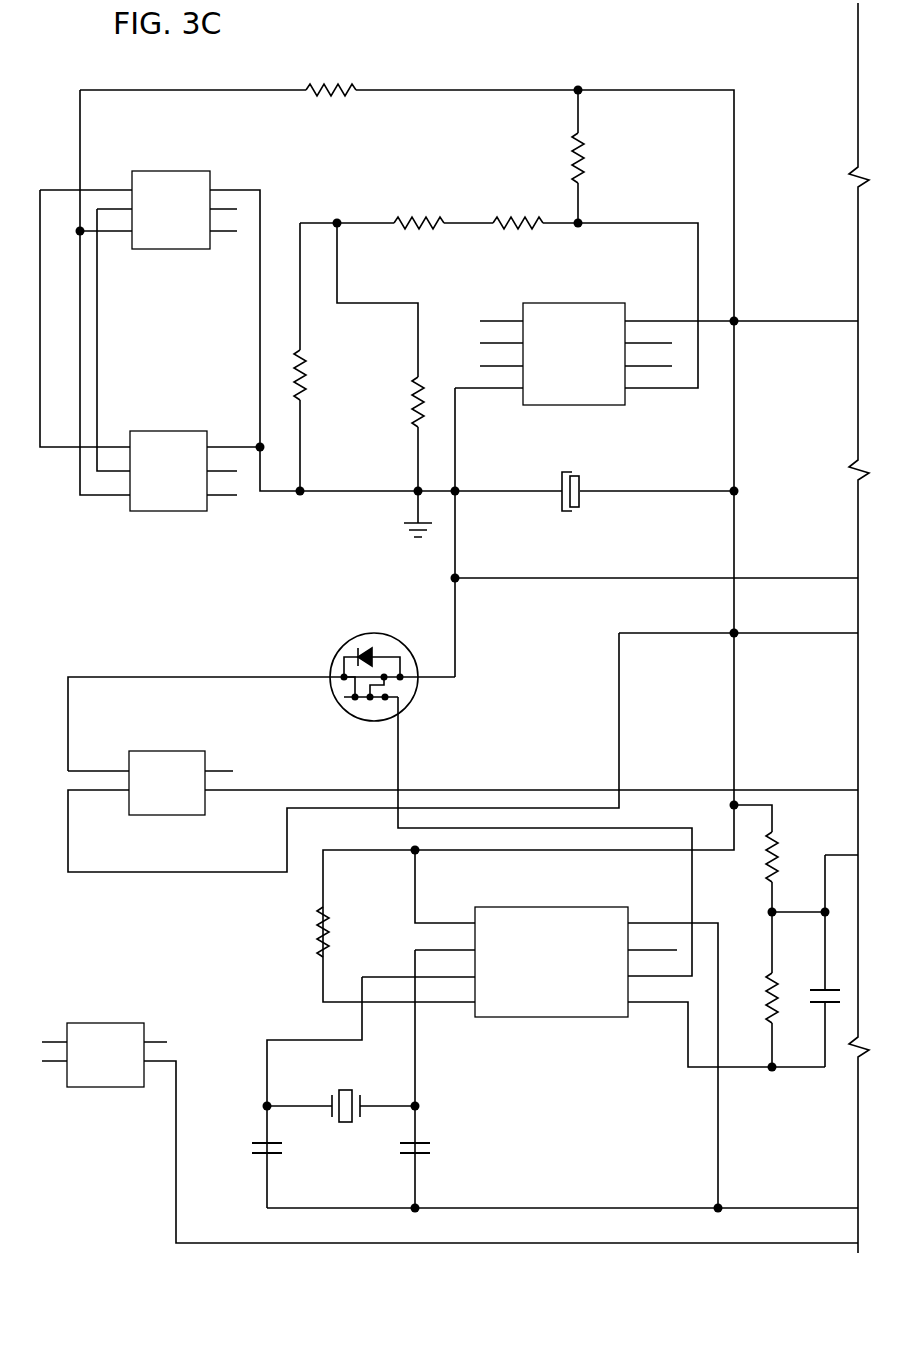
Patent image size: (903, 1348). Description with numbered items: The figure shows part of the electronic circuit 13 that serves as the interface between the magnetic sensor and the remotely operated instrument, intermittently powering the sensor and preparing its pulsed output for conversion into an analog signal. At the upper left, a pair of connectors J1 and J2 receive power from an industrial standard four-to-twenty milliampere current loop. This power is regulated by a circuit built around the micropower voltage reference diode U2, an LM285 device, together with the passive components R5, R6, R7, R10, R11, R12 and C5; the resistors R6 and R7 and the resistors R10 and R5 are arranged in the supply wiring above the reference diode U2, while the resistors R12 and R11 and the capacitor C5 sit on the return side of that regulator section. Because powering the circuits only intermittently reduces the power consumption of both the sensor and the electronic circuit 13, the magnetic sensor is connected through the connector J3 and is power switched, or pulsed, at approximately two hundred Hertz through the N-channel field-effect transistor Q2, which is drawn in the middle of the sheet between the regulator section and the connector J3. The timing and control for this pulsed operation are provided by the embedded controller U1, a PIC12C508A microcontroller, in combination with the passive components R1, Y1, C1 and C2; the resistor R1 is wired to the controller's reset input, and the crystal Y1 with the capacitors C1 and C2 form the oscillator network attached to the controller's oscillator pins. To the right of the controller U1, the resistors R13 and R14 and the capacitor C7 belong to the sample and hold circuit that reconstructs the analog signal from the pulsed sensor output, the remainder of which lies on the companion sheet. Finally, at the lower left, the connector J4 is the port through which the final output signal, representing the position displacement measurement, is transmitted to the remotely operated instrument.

The electronic circuit 13 is at (655, 68).
The connector J1 is at (171, 198).
The connector J2 is at (169, 459).
The connector J3 is at (168, 771).
The connector J4 is at (106, 1043).
The embedded controller U1 is at (552, 950).
The micropower voltage reference diode U2 is at (575, 343).
The N-channel field-effect transistor Q2 is at (373, 666).
The resistor R1 is at (337, 932).
The resistor R5 is at (518, 211).
The resistor R6 is at (331, 79).
The resistor R7 is at (595, 158).
The resistor R10 is at (419, 211).
The resistor R11 is at (398, 402).
The resistor R12 is at (320, 375).
The resistor R13 is at (789, 857).
The resistor R14 is at (755, 998).
The capacitor C1 is at (429, 1149).
The capacitor C2 is at (253, 1149).
The capacitor C5 is at (570, 504).
The capacitor C7 is at (830, 988).
The crystal Y1 is at (346, 1091).